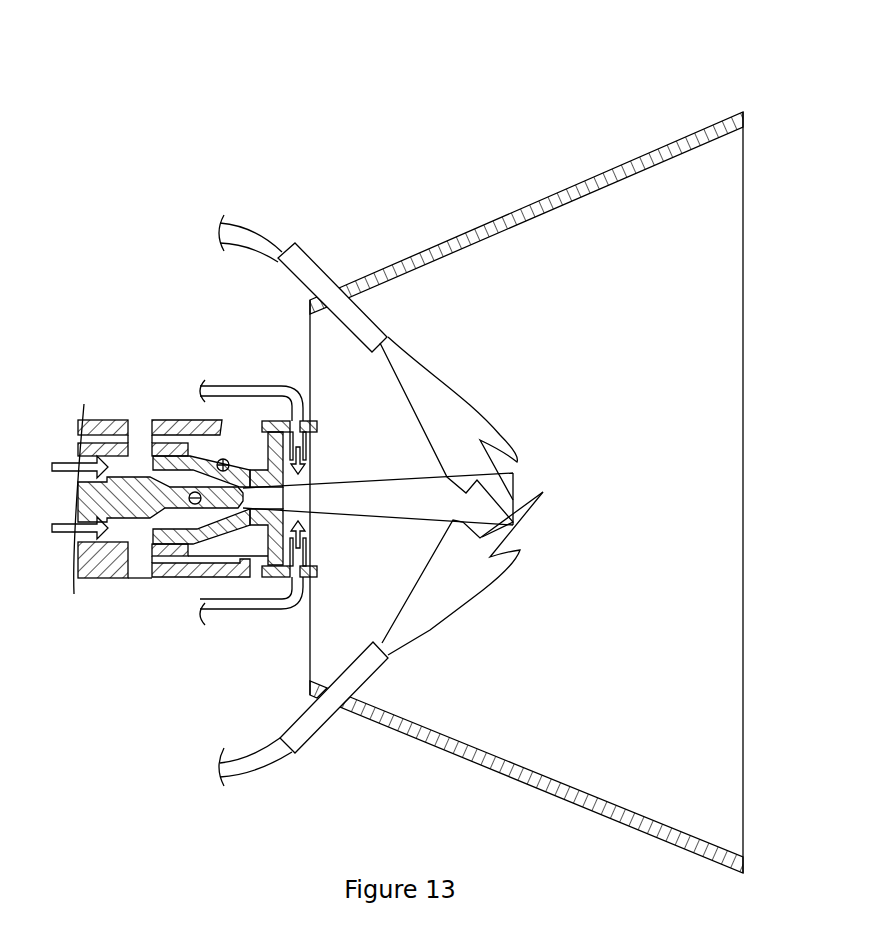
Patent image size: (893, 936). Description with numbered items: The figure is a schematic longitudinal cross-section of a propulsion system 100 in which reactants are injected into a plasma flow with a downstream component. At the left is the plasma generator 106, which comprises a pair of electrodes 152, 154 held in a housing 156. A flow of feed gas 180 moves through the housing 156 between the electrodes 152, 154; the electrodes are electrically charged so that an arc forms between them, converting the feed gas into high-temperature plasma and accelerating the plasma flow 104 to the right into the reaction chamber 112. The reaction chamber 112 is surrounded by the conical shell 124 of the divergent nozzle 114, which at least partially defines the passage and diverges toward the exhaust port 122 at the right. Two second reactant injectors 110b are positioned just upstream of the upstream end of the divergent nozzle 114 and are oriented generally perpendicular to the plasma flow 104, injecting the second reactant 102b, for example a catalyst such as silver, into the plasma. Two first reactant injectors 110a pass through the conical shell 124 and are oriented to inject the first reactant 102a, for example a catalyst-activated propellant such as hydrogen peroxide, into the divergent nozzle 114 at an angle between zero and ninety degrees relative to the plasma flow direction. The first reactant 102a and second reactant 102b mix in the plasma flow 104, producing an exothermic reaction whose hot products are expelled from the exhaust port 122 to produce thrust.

The propulsion system 100 is at (316, 62).
The divergent nozzle 114 is at (517, 122).
The conical shell 124 is at (473, 229).
The reaction chamber 112 is at (578, 297).
The exhaust port 122 is at (746, 294).
The first reactant injector 110a is at (307, 278).
The first reactant 102a is at (430, 386).
The plasma flow 104 is at (422, 507).
The plasma generator 106 is at (140, 360).
The electrode 152 is at (135, 482).
The electrode 154 is at (245, 477).
The housing 156 is at (135, 571).
The feed gas 180 is at (72, 527).
The second reactant injector 110b is at (308, 434).
The second reactant 102b is at (308, 469).